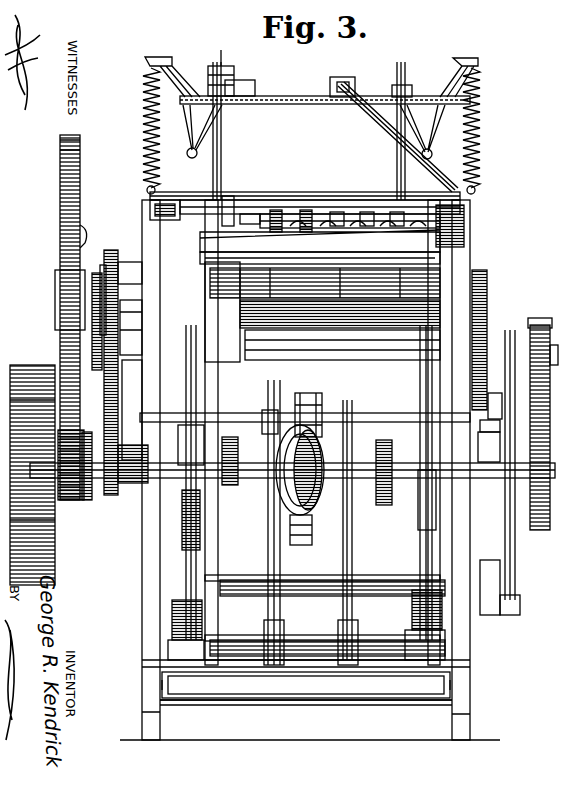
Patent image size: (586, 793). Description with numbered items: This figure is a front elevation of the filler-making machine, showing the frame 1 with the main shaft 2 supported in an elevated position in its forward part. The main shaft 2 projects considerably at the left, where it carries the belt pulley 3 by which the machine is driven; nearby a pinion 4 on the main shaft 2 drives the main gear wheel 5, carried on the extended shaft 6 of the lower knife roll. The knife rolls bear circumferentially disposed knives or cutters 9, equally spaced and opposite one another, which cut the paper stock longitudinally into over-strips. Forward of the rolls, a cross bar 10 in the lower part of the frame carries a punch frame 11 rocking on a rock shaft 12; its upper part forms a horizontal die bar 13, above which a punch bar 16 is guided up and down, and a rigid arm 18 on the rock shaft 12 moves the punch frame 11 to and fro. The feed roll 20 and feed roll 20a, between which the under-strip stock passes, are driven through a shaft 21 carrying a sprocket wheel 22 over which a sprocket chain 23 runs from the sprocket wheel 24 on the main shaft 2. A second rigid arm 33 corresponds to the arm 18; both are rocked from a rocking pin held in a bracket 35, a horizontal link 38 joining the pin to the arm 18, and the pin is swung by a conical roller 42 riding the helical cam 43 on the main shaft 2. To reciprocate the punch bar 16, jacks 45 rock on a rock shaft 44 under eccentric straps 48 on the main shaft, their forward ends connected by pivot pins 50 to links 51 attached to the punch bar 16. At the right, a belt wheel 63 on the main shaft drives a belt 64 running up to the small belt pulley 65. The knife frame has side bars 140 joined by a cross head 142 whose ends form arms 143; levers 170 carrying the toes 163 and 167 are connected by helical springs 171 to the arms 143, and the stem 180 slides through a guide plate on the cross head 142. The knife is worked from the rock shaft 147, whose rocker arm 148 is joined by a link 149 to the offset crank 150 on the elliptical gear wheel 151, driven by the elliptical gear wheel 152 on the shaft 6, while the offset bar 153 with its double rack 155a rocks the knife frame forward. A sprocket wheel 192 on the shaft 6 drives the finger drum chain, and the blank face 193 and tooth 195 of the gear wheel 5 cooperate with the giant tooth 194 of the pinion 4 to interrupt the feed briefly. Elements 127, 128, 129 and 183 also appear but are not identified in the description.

The frame 1 is at (470, 250).
The main shaft 2 is at (128, 482).
The belt pulley 3 is at (55, 543).
The pinion 4 is at (73, 505).
The main gear wheel 5 is at (60, 328).
The extended shaft 6 is at (118, 258).
The knives or cutters 9 is at (246, 310).
The cross bar 10 is at (306, 692).
The punch frame 11 is at (225, 562).
The rock shaft 12 is at (305, 660).
The die bar 13 is at (320, 283).
The punch bar 16 is at (320, 247).
The rigid arm 18 is at (280, 560).
The feed roll 20 is at (325, 316).
The feed roll 20a is at (342, 346).
The shaft 21 is at (142, 330).
The sprocket wheel 22 is at (103, 265).
The sprocket chain 23 is at (118, 408).
The sprocket wheel 24 is at (110, 452).
The rigid arm 33 is at (352, 553).
The bracket 35 is at (322, 412).
The horizontal link 38 is at (264, 410).
The conical roller 42 is at (320, 527).
The helical cam 43 is at (285, 505).
The rock shaft 44 is at (237, 640).
The jacks 45 is at (186, 512).
The eccentric straps 48 is at (238, 493).
The pivot pins 50 is at (172, 615).
The links 51 is at (186, 543).
The belt wheel 63 is at (550, 423).
The belt 64 is at (565, 353).
The belt pulley 65 is at (545, 318).
The bar 127 is at (233, 205).
The bracket 128 is at (150, 207).
The bearing 129 is at (133, 273).
The side bars 140 is at (221, 115).
The cross head 142 is at (376, 96).
The arms 143 is at (172, 62).
The rock shaft 147 is at (313, 598).
The rocker arm 148 is at (505, 585).
The link 149 is at (496, 421).
The offset crank 150 is at (498, 406).
The gear wheel 151 is at (492, 447).
The gear wheel 152 is at (487, 283).
The offset bar 153 is at (372, 128).
The double rack 155a is at (465, 218).
The toe 163 is at (334, 212).
The toe 167 is at (283, 212).
The levers 170 is at (462, 195).
The helical springs 171 is at (143, 95).
The stem 180 is at (234, 72).
The strut 183 is at (218, 138).
The sprocket wheel 192 is at (97, 270).
The blank face 193 is at (65, 207).
The giant tooth 194 is at (88, 437).
The tooth 195 is at (82, 235).